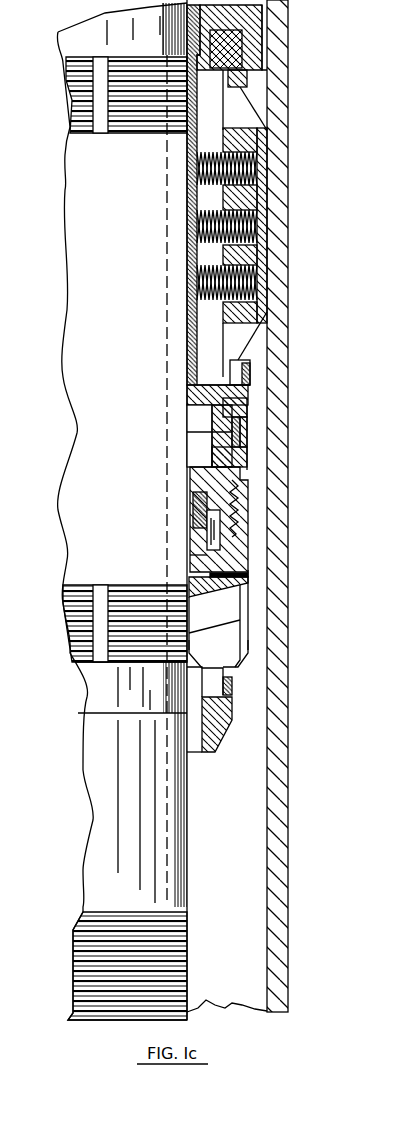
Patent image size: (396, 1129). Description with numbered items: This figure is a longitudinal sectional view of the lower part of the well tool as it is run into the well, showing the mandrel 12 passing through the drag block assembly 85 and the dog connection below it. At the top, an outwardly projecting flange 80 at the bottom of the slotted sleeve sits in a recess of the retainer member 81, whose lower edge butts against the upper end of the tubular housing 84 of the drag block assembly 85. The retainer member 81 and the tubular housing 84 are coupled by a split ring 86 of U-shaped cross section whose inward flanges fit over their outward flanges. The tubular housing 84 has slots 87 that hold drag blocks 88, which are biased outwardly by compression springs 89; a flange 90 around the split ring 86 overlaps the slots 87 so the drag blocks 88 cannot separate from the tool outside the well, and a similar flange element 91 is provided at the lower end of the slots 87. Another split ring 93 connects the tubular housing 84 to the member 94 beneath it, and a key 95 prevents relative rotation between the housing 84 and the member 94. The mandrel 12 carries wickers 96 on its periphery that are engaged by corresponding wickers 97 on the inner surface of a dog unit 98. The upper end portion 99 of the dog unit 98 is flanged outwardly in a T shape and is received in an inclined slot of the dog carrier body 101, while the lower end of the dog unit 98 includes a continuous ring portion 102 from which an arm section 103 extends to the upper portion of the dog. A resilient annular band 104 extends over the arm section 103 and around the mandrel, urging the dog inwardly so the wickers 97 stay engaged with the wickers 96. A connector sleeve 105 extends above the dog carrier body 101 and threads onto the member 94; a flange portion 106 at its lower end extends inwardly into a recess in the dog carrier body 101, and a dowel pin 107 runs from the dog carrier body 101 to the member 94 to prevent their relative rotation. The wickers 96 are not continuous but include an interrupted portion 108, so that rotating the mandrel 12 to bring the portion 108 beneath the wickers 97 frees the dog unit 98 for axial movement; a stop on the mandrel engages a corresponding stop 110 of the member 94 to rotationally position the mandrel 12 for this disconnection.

The mandrel 12 is at (85, 313).
The outwardly projecting flange 80 is at (192, 20).
The retainer member 81 is at (255, 8).
The tubular housing 84 is at (193, 252).
The drag block assembly 85 is at (268, 226).
The split ring 86 is at (245, 45).
The slots 87 is at (210, 327).
The drag blocks 88 is at (258, 313).
The compression springs 89 is at (257, 168).
The flange 90 is at (250, 78).
The flange element 91 is at (245, 378).
The split ring 93 is at (247, 413).
The member 94 is at (187, 463).
The key 95 is at (250, 425).
The wickers 96 is at (145, 110).
The wickers 97 is at (189, 613).
The dog unit 98 is at (250, 638).
The upper end portion 99 is at (232, 613).
The dog carrier body 101 is at (245, 595).
The continuous ring portion 102 is at (227, 730).
The arm section 103 is at (210, 685).
The resilient annular band 104 is at (232, 680).
The connector sleeve 105 is at (242, 537).
The flange portion 106 is at (197, 557).
The dowel pin 107 is at (207, 540).
The interrupted portion 108 is at (103, 62).
The stop 110 is at (197, 508).